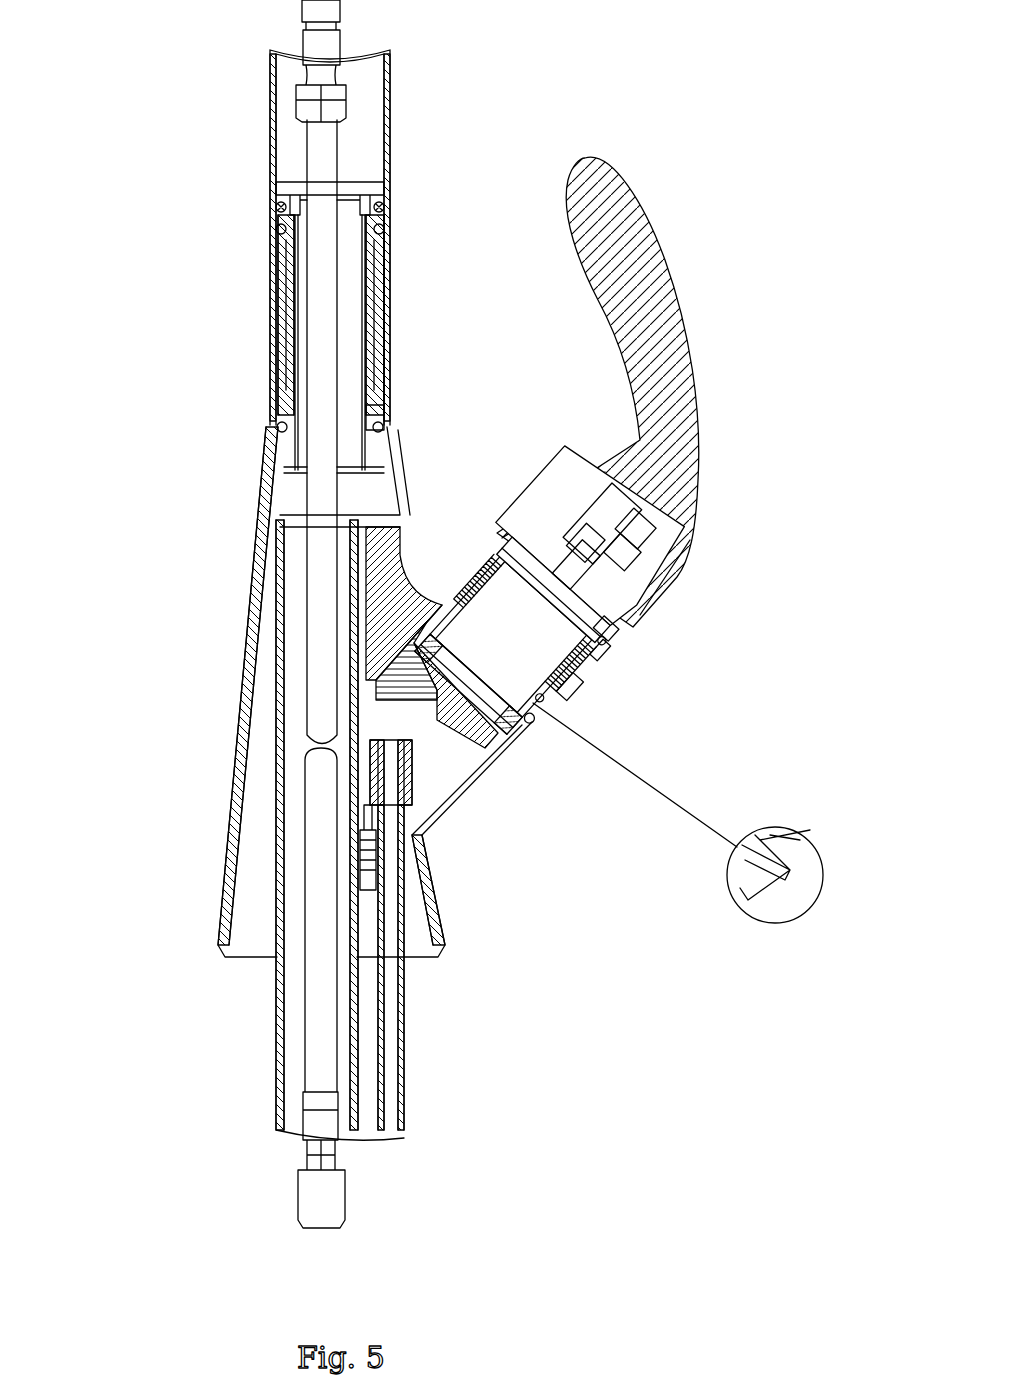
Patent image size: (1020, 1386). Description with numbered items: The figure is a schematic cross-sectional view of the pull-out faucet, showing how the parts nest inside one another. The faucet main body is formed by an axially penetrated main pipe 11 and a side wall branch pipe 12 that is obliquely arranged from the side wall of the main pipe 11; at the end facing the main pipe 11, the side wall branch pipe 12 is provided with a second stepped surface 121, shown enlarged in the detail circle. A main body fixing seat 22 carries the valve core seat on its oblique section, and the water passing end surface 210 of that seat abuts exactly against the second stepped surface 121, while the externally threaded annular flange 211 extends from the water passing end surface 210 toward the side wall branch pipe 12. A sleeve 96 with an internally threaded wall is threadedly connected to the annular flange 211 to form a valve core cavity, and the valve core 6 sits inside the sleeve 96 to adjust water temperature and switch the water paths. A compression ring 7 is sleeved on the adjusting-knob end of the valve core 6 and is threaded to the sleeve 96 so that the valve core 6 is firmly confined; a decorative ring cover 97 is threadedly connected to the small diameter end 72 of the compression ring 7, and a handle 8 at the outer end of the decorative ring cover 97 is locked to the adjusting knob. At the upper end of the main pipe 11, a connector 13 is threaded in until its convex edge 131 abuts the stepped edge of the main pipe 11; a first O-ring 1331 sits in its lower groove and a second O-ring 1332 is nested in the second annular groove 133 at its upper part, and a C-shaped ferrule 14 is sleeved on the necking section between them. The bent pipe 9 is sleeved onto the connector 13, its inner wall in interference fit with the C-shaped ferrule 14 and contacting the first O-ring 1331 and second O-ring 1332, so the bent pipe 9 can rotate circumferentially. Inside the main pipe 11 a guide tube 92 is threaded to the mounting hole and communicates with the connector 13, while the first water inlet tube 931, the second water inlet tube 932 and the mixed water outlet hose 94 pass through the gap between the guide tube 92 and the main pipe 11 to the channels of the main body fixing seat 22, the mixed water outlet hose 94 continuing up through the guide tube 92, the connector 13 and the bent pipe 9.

The valve core 6 is at (550, 555).
The compression ring 7 is at (597, 658).
The handle 8 is at (656, 355).
The bent pipe 9 is at (271, 258).
The main pipe 11 is at (257, 845).
The side wall branch pipe 12 is at (437, 603).
The connector 13 is at (368, 352).
The C-shaped ferrule 14 is at (273, 325).
The main body fixing seat 22 is at (490, 712).
The small diameter end 72 is at (606, 652).
The guide tube 92 is at (297, 690).
The mixed water outlet hose 94 is at (317, 1074).
The sleeve 96 is at (565, 692).
The decorative ring cover 97 is at (606, 636).
The second stepped surface 121 is at (790, 877).
The convex edge 131 is at (386, 422).
The second annular groove 133 is at (276, 229).
The water passing end surface 210 is at (522, 722).
The annular flange 211 is at (535, 700).
The first water inlet tube 931 is at (494, 935).
The second water inlet tube 932 is at (368, 847).
The first O-ring 1331 is at (277, 427).
The second O-ring 1332 is at (385, 229).